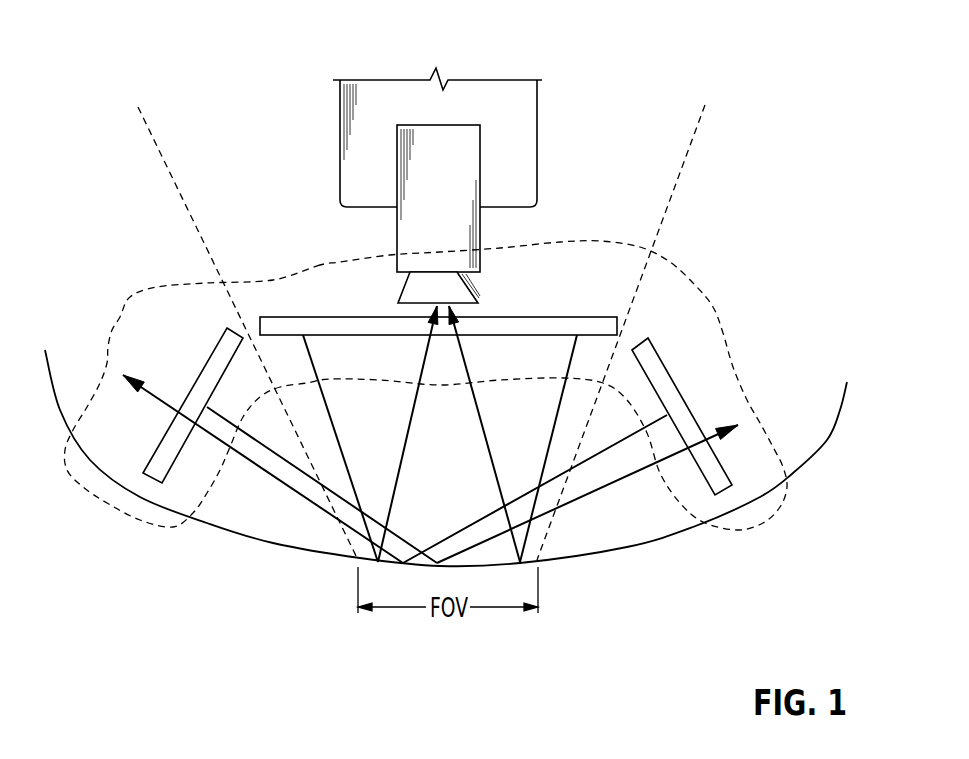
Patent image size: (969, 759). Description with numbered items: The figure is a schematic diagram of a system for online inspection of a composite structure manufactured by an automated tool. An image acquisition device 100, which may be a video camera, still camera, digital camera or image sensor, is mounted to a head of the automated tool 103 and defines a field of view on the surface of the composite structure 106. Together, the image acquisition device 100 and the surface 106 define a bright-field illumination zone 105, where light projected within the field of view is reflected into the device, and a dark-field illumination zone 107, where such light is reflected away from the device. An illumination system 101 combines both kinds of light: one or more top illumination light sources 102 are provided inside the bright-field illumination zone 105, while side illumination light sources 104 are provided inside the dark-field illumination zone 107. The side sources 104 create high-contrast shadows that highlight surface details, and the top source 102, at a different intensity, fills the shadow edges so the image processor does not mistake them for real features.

The image acquisition device 100 is at (415, 124).
The illumination system 101 is at (305, 268).
The top illumination light source 102 is at (550, 317).
The automated tool 103 is at (537, 112).
The side illumination light source 104 is at (212, 353).
The bright-field illumination zone 105 is at (287, 162).
The surface of the composite structure 106 is at (832, 437).
The dark-field illumination zone 107 is at (117, 233).